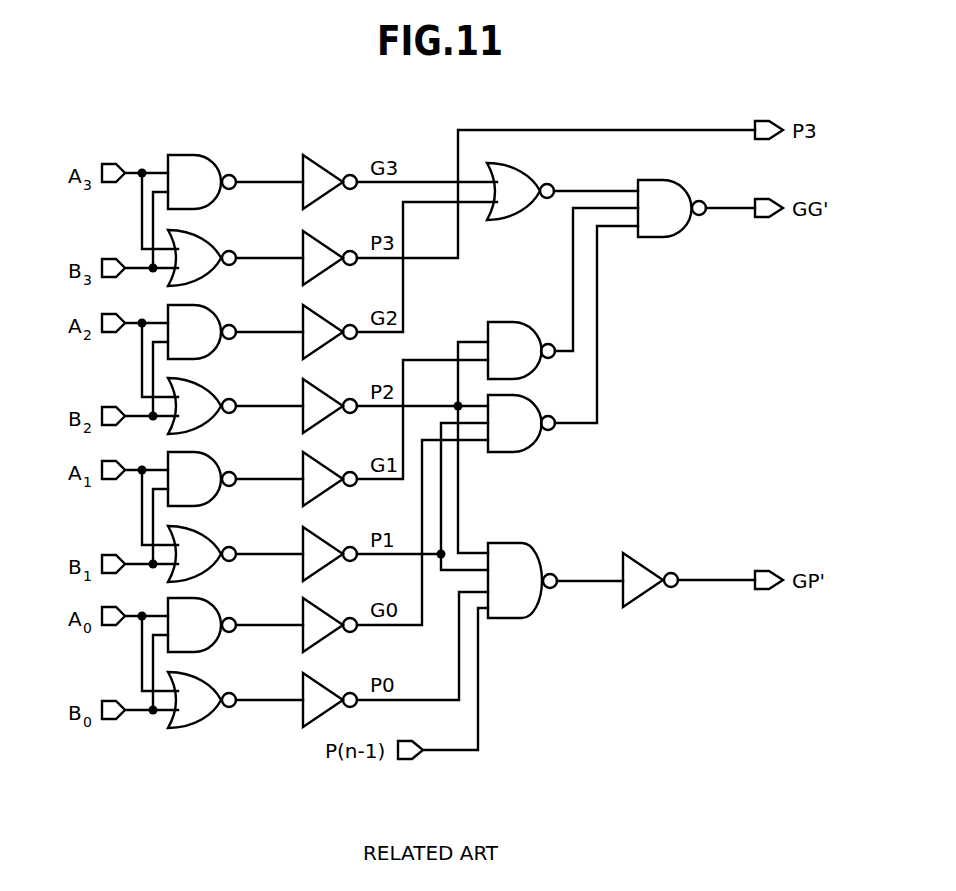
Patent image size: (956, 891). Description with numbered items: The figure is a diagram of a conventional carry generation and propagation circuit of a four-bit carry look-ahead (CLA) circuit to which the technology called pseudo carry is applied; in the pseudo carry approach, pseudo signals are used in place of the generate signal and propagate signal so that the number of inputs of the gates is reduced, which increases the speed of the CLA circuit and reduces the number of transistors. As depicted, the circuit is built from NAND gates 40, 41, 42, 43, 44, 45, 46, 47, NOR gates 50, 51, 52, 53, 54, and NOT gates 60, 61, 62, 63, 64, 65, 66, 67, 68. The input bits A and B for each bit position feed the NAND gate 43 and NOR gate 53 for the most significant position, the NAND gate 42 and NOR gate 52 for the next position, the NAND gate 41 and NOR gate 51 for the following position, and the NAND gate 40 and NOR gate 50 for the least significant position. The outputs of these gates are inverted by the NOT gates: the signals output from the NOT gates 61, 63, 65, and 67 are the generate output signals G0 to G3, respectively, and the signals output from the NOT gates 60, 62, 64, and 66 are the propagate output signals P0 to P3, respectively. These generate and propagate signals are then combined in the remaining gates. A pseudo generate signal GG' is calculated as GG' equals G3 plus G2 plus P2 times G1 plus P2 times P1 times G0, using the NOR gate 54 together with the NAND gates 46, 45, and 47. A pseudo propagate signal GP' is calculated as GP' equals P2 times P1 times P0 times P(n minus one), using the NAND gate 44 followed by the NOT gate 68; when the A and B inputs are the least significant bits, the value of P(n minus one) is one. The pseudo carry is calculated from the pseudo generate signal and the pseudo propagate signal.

The NAND gate 40 is at (213, 603).
The NAND gate 41 is at (213, 457).
The NAND gate 42 is at (213, 311).
The NAND gate 43 is at (213, 161).
The NAND gate 44 is at (535, 551).
The NAND gate 45 is at (535, 399).
The NAND gate 46 is at (535, 328).
The NAND gate 47 is at (682, 179).
The NOR gate 50 is at (213, 683).
The NOR gate 51 is at (213, 535).
The NOR gate 52 is at (213, 387).
The NOR gate 53 is at (213, 238).
The NOR gate 54 is at (526, 169).
The NOT gate 60 is at (327, 685).
The NOT gate 61 is at (327, 611).
The NOT gate 62 is at (327, 541).
The NOT gate 63 is at (327, 464).
The NOT gate 64 is at (327, 393).
The NOT gate 65 is at (327, 316).
The NOT gate 66 is at (327, 243).
The NOT gate 67 is at (327, 167).
The NOT gate 68 is at (645, 564).